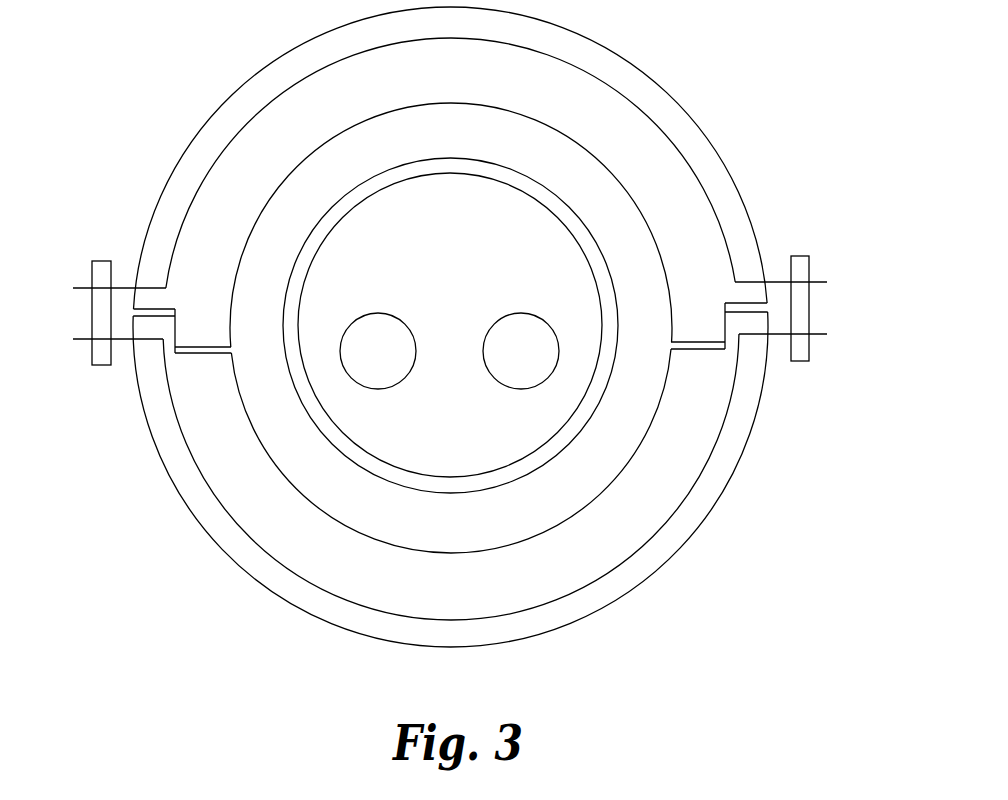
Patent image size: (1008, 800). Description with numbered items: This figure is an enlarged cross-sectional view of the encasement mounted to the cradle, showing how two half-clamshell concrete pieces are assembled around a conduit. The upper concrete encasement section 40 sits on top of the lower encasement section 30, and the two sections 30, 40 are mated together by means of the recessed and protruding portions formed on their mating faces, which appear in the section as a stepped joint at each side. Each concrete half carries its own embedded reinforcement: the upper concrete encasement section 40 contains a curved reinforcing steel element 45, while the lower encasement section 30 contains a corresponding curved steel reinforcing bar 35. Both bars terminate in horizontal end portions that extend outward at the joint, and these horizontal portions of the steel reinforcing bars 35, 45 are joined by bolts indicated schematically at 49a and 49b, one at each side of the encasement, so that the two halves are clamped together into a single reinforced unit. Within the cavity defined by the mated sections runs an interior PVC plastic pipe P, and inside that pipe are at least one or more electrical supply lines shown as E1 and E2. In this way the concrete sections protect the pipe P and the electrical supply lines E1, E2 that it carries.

The lower encasement section 30 is at (712, 485).
The steel reinforcing bar 35 is at (363, 607).
The upper concrete encasement section 40 is at (712, 167).
The curved reinforcing steel element 45 is at (253, 117).
The bolt 49a is at (92, 272).
The bolt 49b is at (810, 272).
The interior PVC plastic pipe P is at (420, 176).
The electrical supply line E1 is at (378, 351).
The electrical supply line E2 is at (521, 351).